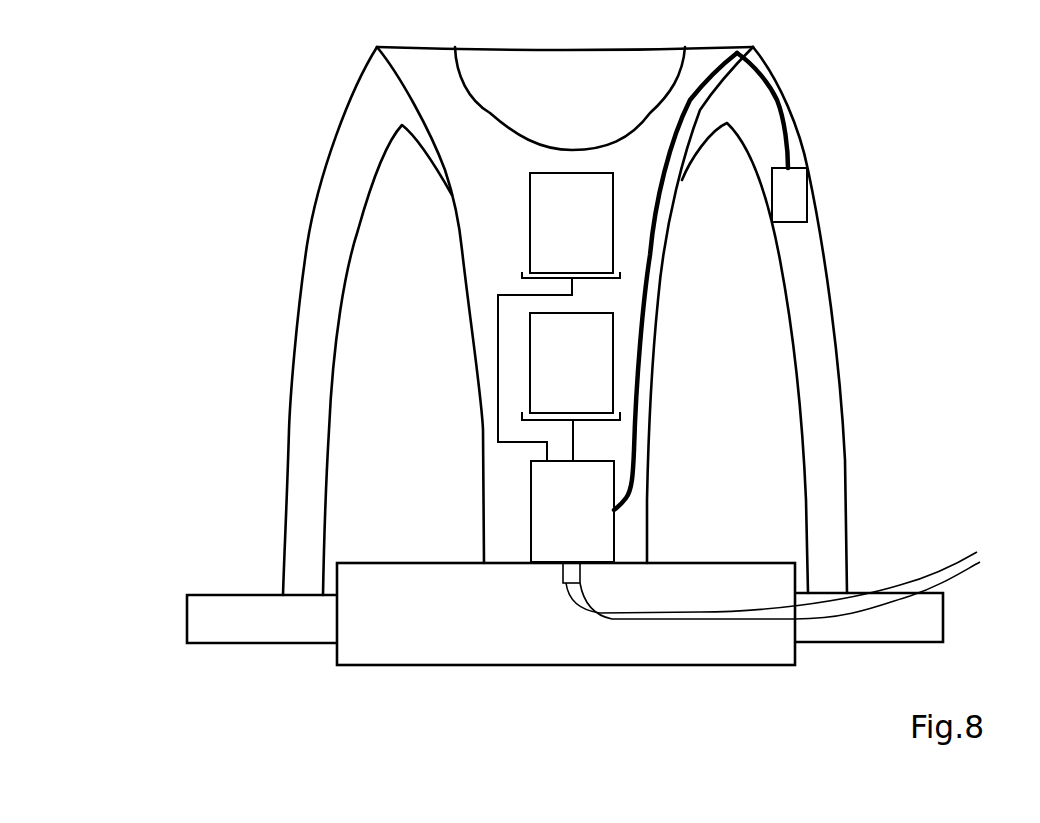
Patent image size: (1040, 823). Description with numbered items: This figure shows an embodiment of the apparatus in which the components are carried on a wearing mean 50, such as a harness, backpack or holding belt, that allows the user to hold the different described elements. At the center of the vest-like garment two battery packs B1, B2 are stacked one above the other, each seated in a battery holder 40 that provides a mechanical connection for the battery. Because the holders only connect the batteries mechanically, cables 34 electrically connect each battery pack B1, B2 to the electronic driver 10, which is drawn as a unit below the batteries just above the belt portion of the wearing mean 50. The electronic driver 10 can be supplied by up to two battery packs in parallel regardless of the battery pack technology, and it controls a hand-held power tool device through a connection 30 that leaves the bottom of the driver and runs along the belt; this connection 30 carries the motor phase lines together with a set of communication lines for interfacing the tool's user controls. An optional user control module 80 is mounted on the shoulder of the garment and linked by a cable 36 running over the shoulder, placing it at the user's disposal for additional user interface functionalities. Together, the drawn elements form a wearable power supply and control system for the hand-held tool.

The electronic driver 10 is at (572, 511).
The connection 30 is at (703, 615).
The cables 34 is at (572, 430).
The cable along shoulder 36 is at (650, 255).
The battery holder 40 is at (620, 274).
The wearing mean 50 is at (608, 664).
The user control module 80 is at (803, 195).
The battery pack B1 is at (571, 223).
The battery pack B2 is at (571, 363).